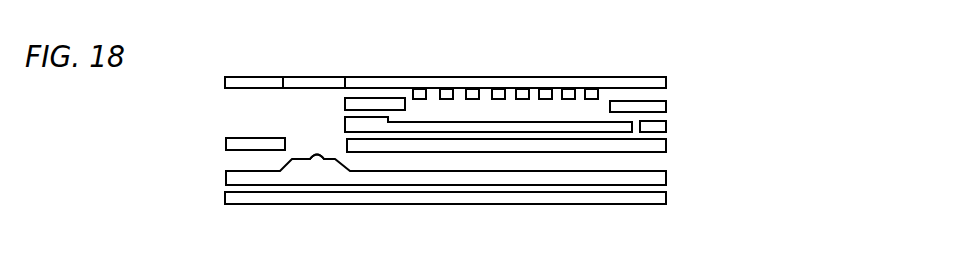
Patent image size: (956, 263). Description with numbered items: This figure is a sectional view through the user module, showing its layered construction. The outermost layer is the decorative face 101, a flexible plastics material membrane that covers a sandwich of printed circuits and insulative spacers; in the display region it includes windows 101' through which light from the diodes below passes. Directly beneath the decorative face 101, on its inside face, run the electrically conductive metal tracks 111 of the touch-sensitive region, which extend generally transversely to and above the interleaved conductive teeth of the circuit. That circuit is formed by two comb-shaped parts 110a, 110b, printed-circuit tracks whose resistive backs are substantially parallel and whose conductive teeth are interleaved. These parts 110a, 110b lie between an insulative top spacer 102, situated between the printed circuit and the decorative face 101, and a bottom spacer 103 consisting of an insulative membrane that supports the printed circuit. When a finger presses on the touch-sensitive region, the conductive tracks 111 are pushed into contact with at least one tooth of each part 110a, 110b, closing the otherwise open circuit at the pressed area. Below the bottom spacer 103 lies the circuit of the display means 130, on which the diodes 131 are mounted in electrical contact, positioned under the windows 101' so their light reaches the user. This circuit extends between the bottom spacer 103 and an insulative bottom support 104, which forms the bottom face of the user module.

The decorative face 101 is at (484, 57).
The windows 101' is at (314, 54).
The top spacer 102 is at (666, 105).
The bottom spacer 103 is at (667, 147).
The bottom support 104 is at (667, 198).
The first comb-shaped part 110a is at (430, 127).
The second comb-shaped part 110b is at (668, 126).
The conductive metal tracks 111 is at (511, 92).
The display means 130 is at (362, 185).
The diodes 131 is at (315, 151).